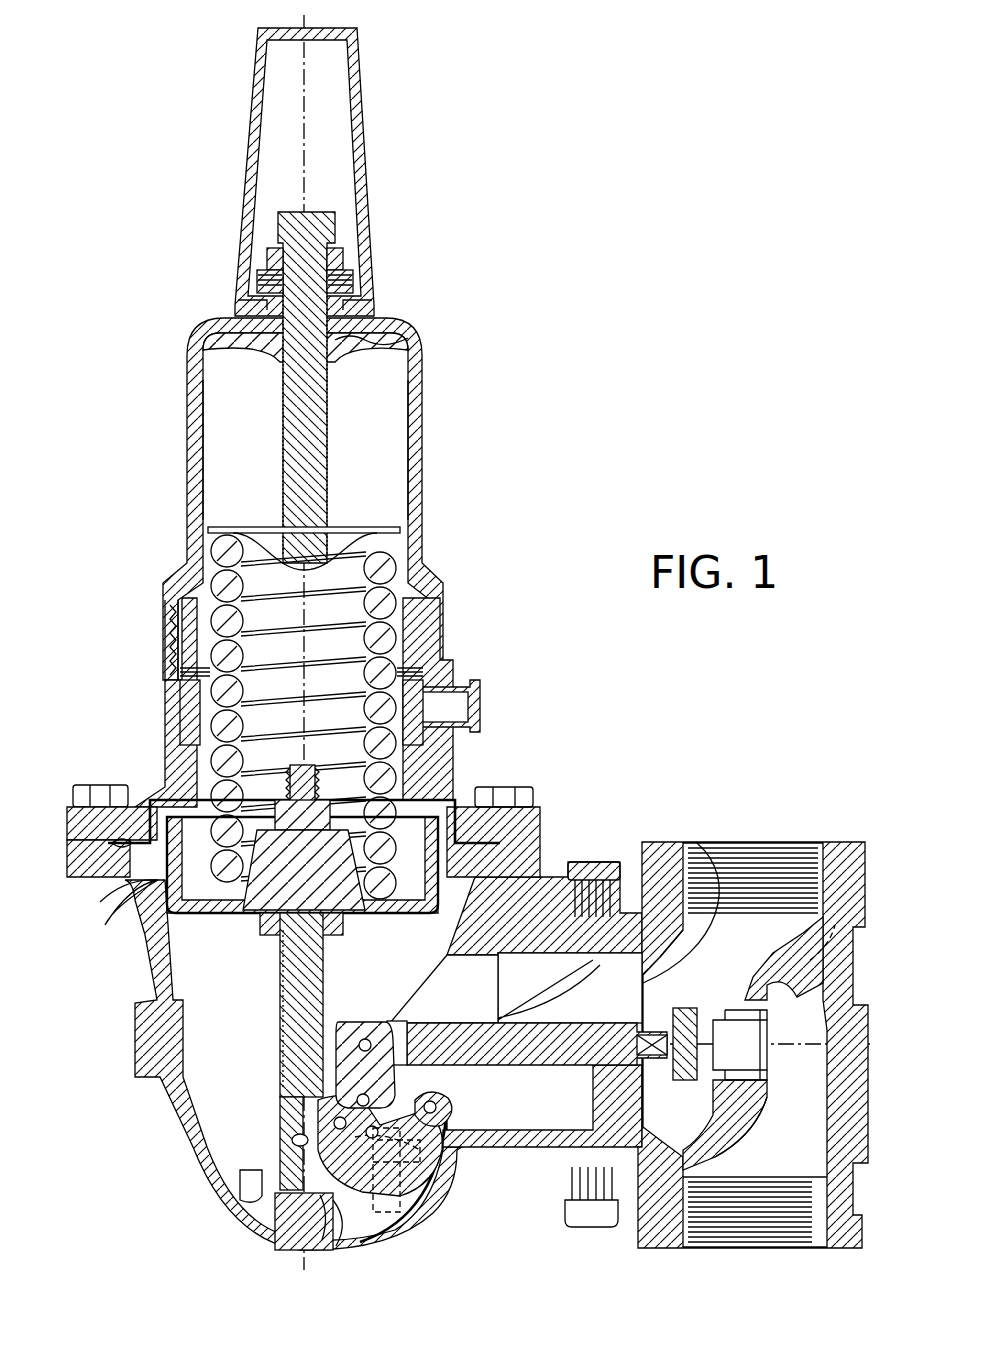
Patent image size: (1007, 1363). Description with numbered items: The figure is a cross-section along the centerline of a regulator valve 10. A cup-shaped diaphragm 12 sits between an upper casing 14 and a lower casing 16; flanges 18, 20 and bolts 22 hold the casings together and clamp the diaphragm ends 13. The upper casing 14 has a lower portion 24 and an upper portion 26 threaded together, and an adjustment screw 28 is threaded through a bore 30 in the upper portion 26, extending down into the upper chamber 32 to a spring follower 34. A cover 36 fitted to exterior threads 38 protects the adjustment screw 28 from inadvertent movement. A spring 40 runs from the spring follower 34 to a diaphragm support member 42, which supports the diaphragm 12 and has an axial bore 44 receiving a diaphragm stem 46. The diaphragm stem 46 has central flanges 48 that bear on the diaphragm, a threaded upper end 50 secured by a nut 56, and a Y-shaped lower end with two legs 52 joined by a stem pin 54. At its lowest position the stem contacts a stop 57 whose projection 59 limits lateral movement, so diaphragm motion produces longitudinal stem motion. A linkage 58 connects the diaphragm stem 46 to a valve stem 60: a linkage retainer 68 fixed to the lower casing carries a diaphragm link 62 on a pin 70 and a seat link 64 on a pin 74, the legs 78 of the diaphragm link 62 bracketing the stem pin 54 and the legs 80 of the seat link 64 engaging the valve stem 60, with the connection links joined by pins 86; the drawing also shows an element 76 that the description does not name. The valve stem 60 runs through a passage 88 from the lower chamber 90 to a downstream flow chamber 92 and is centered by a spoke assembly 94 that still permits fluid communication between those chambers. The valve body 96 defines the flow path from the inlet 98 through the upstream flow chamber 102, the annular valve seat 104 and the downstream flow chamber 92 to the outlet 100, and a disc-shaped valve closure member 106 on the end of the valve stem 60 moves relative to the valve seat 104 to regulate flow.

The regulator valve 10 is at (575, 142).
The diaphragm 12 is at (118, 922).
The diaphragm ends 13 is at (115, 852).
The upper casing 14 is at (165, 693).
The lower casing 16 is at (150, 975).
The flange 18 is at (67, 862).
The flange 20 is at (67, 822).
The bolts 22 is at (73, 792).
The lower portion 24 is at (165, 638).
The upper portion 26 is at (187, 410).
The adjustment screw 28 is at (337, 222).
The bore 30 is at (365, 342).
The upper chamber 32 is at (343, 442).
The spring follower 34 is at (385, 530).
The cover 36 is at (250, 105).
The exterior threads 38 is at (352, 284).
The spring 40 is at (385, 580).
The diaphragm support member 42 is at (420, 790).
The axial bore 44 is at (252, 920).
The diaphragm stem 46 is at (280, 1005).
The central flanges 48 is at (348, 926).
The threaded upper end 50 is at (197, 746).
The legs 52 is at (292, 1142).
The stem pin 54 is at (280, 1152).
The nut 56 is at (286, 795).
The stop 57 is at (345, 1226).
The linkage 58 is at (383, 992).
The projection 59 is at (240, 1182).
The valve stem 60 is at (590, 1066).
The diaphragm link 62 is at (400, 1212).
The seat link 64 is at (336, 1030).
The linkage retainer 68 is at (480, 1110).
The pin 70 is at (437, 1104).
The pin 74 is at (445, 1166).
The valve spring 76 is at (510, 1025).
The legs 78 is at (275, 1226).
The legs 80 is at (403, 1013).
The pins 86 is at (287, 1086).
The passage 88 is at (595, 1007).
The lower chamber 90 is at (198, 1011).
The downstream flow chamber 92 is at (695, 992).
The spoke assembly 94 is at (708, 862).
The valve body 96 is at (866, 878).
The inlet 98 is at (723, 1262).
The outlet 100 is at (755, 828).
The upstream flow chamber 102 is at (761, 1142).
The annular valve seat 104 is at (768, 1014).
The valve closure member 106 is at (698, 1068).